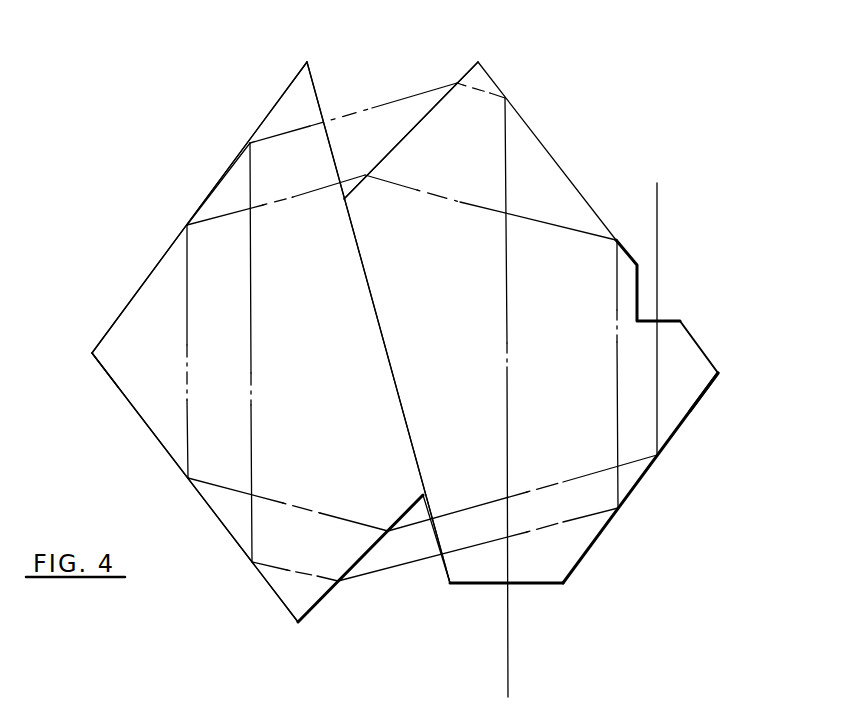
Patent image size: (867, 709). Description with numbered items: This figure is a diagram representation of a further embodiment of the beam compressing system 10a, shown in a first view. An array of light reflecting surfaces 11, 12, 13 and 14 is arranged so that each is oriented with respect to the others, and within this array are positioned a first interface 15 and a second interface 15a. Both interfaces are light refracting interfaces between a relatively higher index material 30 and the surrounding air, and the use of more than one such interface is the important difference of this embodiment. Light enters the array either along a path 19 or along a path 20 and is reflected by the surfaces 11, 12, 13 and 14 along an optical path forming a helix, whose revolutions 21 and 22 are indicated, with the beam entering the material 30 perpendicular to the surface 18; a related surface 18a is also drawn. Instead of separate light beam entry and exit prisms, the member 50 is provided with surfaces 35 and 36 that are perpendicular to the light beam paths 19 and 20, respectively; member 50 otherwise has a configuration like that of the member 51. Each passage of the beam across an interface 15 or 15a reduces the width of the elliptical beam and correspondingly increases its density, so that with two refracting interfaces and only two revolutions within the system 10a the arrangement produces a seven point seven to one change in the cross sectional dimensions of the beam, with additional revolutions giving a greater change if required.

The system 10a is at (208, 167).
The reflecting surface 11 is at (153, 275).
The reflecting surface 12 is at (133, 410).
The reflecting surface 13 is at (645, 475).
The reflecting surface 14 is at (541, 143).
The first interface 15 is at (458, 81).
The second interface 15a is at (323, 603).
The surface 18 is at (312, 80).
The fold line 18a is at (443, 572).
The path 19 is at (657, 207).
The path 20 is at (512, 610).
The revolution 21 is at (252, 307).
The revolution 22 is at (188, 318).
The material 30 is at (490, 157).
The surface 35 is at (665, 320).
The surface 36 is at (555, 589).
The member 50 is at (703, 390).
The member 51 is at (113, 383).